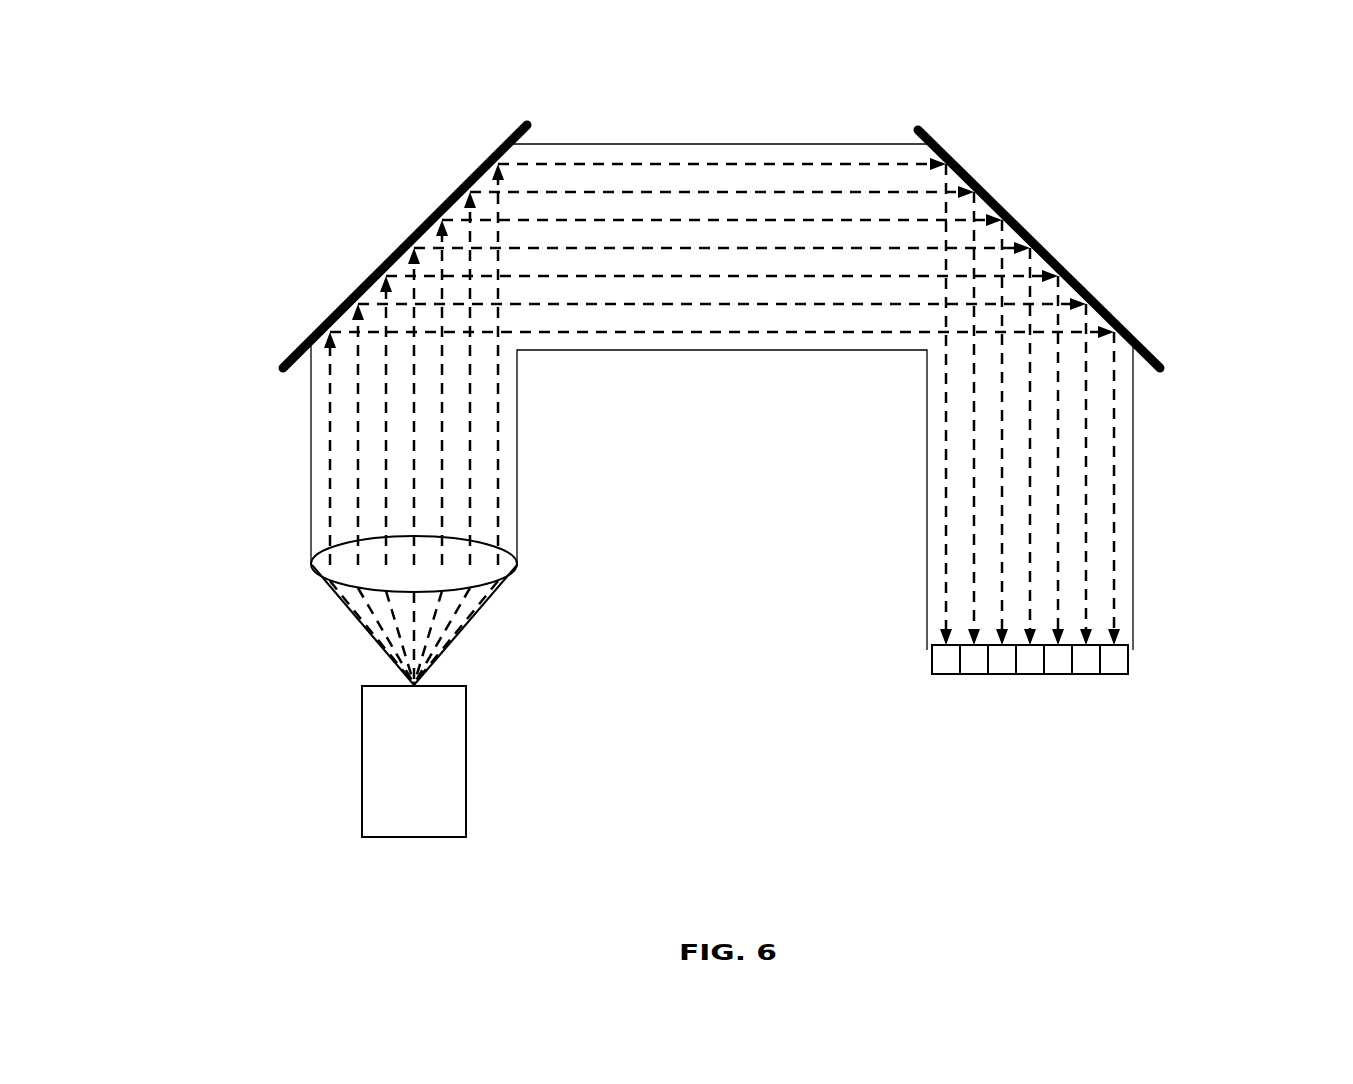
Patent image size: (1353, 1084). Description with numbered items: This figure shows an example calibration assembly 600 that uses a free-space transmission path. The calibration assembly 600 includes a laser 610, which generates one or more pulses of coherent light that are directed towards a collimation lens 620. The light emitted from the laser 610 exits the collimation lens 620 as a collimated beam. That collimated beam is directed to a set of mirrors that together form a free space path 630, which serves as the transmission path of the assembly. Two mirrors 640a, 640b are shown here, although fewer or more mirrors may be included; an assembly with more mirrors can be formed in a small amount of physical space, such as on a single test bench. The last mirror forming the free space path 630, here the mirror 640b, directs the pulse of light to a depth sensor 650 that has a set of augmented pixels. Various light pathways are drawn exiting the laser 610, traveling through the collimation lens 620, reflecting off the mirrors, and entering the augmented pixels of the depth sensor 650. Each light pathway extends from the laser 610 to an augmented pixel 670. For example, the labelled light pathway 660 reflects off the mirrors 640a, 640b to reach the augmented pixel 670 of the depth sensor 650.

The calibration assembly 600 is at (711, 66).
The laser 610 is at (397, 787).
The collimation lens 620 is at (517, 567).
The free space path 630 is at (522, 443).
The mirror 640a is at (403, 245).
The mirror 640b is at (1057, 245).
The depth sensor 650 is at (1128, 658).
The light pathway 660 is at (357, 423).
The augmented pixel 670 is at (1085, 675).